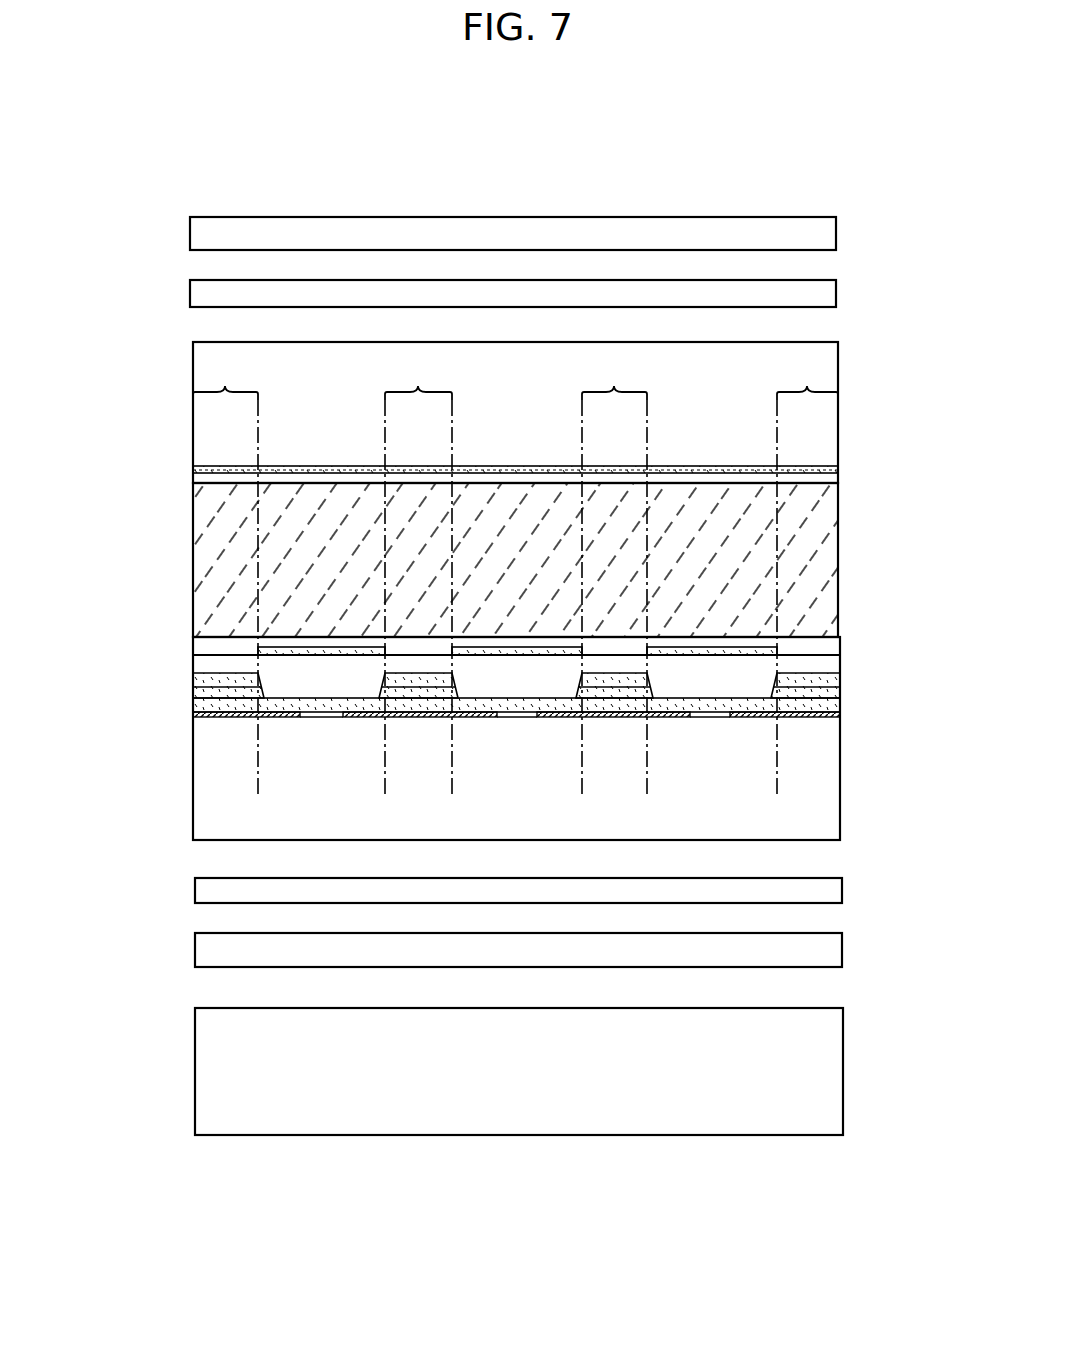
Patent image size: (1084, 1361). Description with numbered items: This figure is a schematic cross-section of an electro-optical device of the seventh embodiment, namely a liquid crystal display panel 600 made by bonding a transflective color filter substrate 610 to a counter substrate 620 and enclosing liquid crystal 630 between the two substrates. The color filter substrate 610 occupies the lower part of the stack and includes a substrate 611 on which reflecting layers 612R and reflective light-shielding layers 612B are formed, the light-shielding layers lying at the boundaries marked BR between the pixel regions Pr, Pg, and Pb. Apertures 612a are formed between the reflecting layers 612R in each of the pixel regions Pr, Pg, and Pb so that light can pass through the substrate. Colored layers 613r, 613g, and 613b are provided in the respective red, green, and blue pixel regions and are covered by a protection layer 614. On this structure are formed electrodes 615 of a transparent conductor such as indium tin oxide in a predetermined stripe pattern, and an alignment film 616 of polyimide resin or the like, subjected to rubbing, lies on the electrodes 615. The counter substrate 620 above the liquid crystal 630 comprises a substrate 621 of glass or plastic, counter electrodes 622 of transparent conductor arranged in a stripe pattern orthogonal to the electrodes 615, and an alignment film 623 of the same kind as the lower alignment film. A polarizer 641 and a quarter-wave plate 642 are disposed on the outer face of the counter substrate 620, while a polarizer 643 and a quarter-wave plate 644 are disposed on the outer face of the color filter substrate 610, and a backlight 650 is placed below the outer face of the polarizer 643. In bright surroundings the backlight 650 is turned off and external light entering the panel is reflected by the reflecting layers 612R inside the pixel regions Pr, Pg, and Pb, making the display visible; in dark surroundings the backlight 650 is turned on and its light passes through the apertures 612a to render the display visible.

The liquid crystal display panel 600 is at (535, 104).
The polarizer 641 is at (190, 236).
The quarter-wave plate 642 is at (836, 290).
The counter substrate 620 is at (190, 487).
The substrate 621 is at (838, 414).
The counter electrodes 622 is at (838, 470).
The alignment film 623 is at (325, 473).
The light shielding region BR is at (515, 378).
The liquid crystal 630 is at (844, 485).
The color filter substrate 610 is at (191, 637).
The substrate 611 is at (840, 805).
The reflecting layers 612R is at (265, 717).
The reflective light-shielding layers 612B is at (218, 717).
The apertures 612a is at (343, 725).
The colored layer 613r is at (200, 702).
The colored layer 613g is at (840, 678).
The colored layer 613b is at (653, 713).
The protection layer 614 is at (273, 668).
The electrodes 615 is at (275, 647).
The alignment film 616 is at (325, 638).
The pixel region Pr is at (388, 787).
The pixel region Pg is at (582, 787).
The pixel region Pb is at (777, 787).
The quarter-wave plate 644 is at (842, 890).
The polarizer 643 is at (195, 950).
The backlight 650 is at (480, 1135).